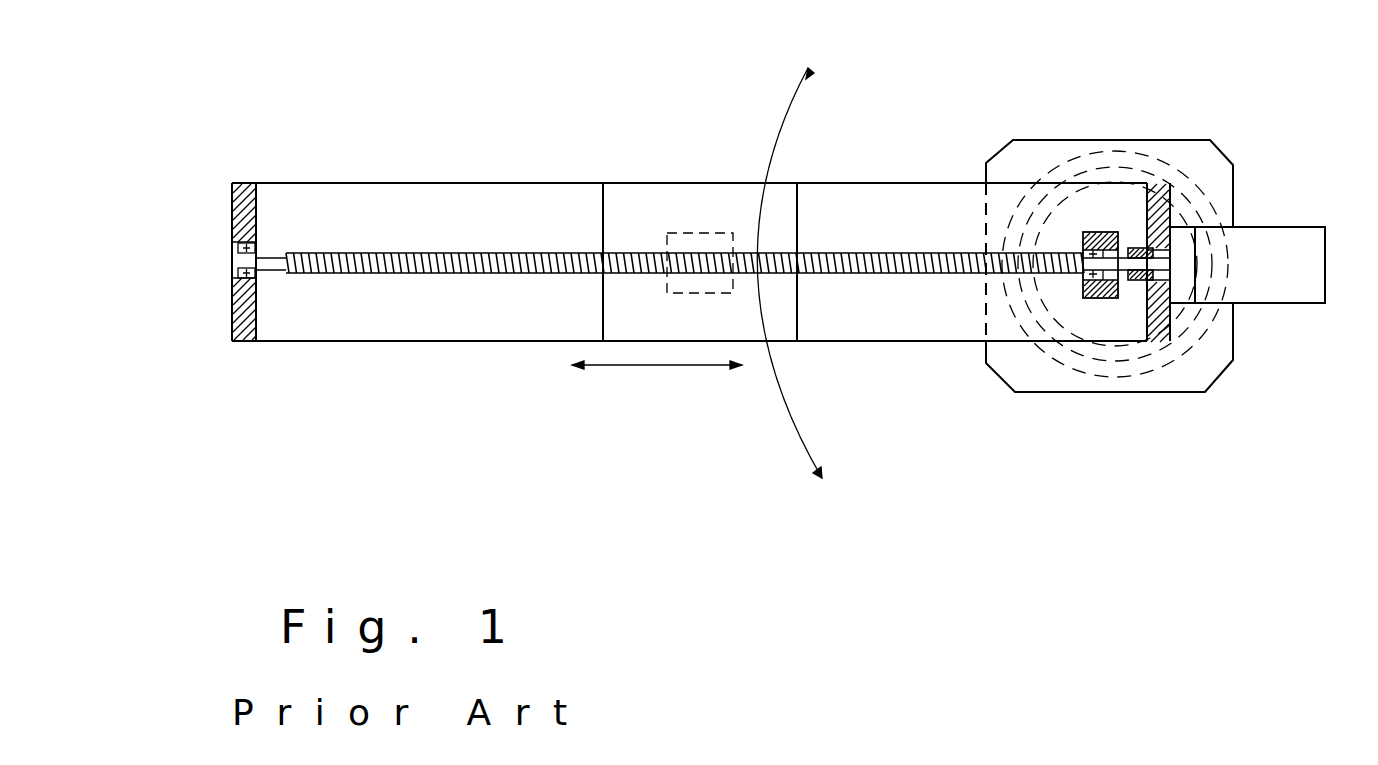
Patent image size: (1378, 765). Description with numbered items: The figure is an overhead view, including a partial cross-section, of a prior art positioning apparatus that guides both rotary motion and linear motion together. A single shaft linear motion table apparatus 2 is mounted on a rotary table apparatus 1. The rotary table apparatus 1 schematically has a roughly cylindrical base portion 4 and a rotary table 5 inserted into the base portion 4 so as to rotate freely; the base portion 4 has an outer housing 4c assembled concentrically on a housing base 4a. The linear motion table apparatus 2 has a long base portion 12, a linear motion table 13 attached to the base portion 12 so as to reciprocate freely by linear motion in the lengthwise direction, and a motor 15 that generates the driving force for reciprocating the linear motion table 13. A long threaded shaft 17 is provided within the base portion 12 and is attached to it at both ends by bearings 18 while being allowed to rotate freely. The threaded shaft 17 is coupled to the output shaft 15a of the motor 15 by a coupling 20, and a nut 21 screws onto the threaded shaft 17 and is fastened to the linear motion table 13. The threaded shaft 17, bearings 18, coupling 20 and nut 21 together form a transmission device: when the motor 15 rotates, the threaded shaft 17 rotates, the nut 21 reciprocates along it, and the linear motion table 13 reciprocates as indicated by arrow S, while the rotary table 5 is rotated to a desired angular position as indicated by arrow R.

The rotary table apparatus 1 is at (1010, 415).
The single shaft linear motion table apparatus 2 is at (425, 160).
The base portion 4 is at (1175, 363).
The housing base 4a is at (1148, 385).
The outer housing 4c is at (1237, 347).
The rotary table 5 is at (1123, 182).
The base portion 12 is at (528, 343).
The linear motion table 13 is at (665, 195).
The motor 15 is at (1272, 245).
The output shaft 15a is at (1175, 245).
The threaded shaft 17 is at (830, 262).
The bearings 18 is at (267, 240).
The coupling 20 is at (1146, 250).
The nut 21 is at (708, 245).